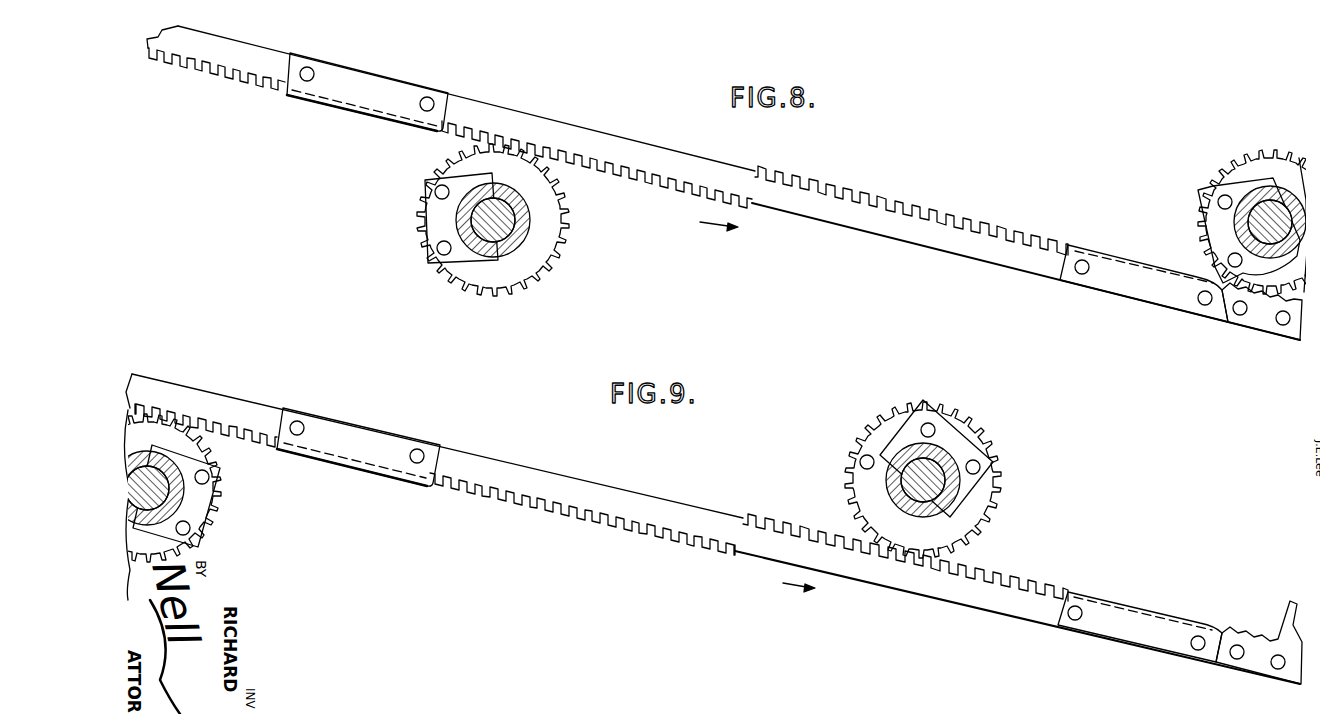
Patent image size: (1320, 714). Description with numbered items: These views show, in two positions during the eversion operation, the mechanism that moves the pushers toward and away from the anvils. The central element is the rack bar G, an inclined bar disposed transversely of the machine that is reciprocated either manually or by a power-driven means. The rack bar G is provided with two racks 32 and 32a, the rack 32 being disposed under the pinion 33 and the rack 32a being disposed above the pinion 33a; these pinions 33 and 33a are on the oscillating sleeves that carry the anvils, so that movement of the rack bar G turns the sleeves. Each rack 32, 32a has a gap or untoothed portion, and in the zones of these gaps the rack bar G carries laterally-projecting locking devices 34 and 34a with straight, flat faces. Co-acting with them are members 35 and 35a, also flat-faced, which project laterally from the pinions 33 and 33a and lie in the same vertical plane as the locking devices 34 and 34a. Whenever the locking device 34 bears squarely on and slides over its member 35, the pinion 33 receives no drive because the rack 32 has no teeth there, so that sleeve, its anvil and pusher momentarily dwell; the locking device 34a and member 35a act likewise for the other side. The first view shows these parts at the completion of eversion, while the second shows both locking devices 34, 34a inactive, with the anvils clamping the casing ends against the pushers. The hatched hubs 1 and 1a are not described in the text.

In FIG. 8, the rack bar G is at (735, 162).
In FIG. 9, the rack bar G is at (592, 475).
In FIG. 8, the rack 32 is at (924, 206).
In FIG. 9, the rack 32 is at (830, 531).
In FIG. 8, the rack 32a is at (620, 176).
In FIG. 9, the rack 32a is at (512, 503).
In FIG. 8, the pinion 33 is at (1274, 162).
In FIG. 9, the pinion 33 is at (855, 455).
In FIG. 8, the pinion 33a is at (485, 281).
In FIG. 9, the pinion 33a is at (187, 447).
In FIG. 8, the locking device 34 is at (1150, 288).
In FIG. 9, the locking device 34 is at (1125, 628).
In FIG. 8, the locking device 34a is at (368, 90).
In FIG. 9, the locking device 34a is at (358, 447).
In FIG. 8, the member 35 is at (1222, 233).
In FIG. 9, the member 35 is at (965, 448).
In FIG. 8, the member 35a is at (440, 217).
In FIG. 9, the member 35a is at (205, 488).
In FIG. 8, the shaft hub 1 is at (1263, 207).
In FIG. 9, the shaft hub 1 is at (912, 465).
In FIG. 8, the shaft hub 1a is at (508, 232).
In FIG. 9, the shaft hub 1a is at (180, 502).